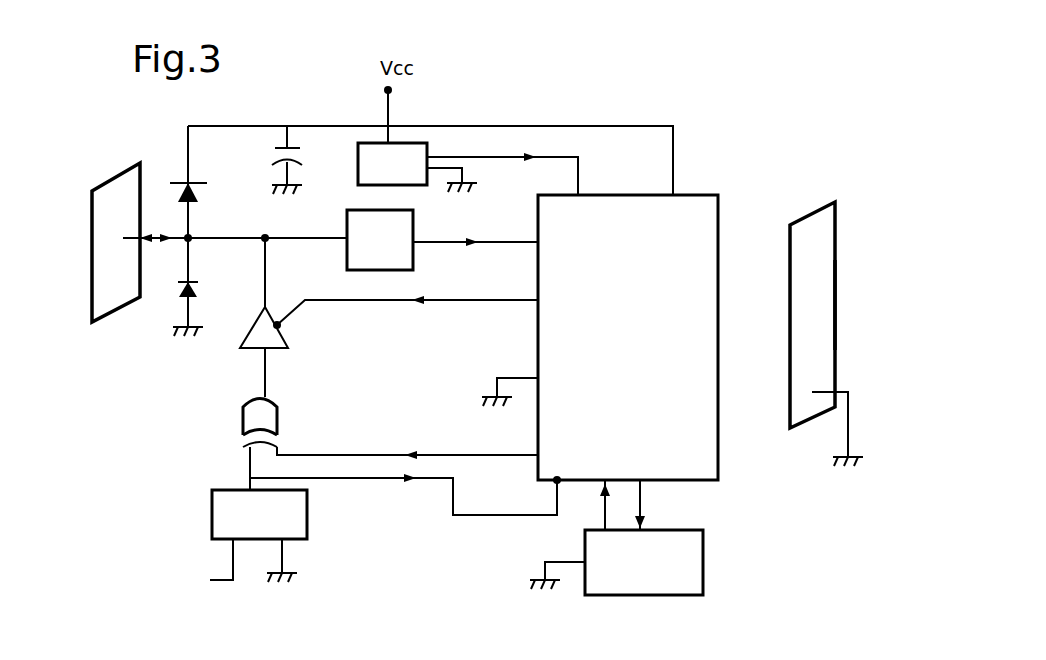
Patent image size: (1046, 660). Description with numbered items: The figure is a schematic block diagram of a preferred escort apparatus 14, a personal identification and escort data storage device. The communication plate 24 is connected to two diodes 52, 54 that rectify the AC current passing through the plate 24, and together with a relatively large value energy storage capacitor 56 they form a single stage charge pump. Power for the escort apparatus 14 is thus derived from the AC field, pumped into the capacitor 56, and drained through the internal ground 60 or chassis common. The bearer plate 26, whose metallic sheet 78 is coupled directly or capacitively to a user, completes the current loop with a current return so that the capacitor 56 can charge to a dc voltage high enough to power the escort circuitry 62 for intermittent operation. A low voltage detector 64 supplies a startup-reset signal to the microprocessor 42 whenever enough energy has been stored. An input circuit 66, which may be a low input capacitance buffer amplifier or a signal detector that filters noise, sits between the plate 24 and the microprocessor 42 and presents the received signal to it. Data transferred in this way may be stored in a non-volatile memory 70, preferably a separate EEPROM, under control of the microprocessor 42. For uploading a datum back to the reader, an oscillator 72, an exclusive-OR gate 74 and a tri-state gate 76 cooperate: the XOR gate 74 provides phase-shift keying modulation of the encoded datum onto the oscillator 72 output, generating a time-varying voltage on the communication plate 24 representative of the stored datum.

The escort apparatus 14 is at (754, 104).
The communication plate 24 is at (128, 190).
The bearer plate 26 is at (812, 230).
The microprocessor 42 is at (548, 352).
The diode 52 is at (198, 189).
The diode 54 is at (199, 289).
The energy storage capacitor 56 is at (275, 157).
The internal ground 60 is at (174, 328).
The escort circuitry 62 is at (612, 113).
The low voltage detector 64 is at (388, 178).
The input circuit 66 is at (416, 266).
The non-volatile memory 70 is at (680, 583).
The oscillator 72 is at (283, 516).
The exclusive-OR gate 74 is at (262, 413).
The tri-state gate 76 is at (270, 341).
The metallic sheet 78 is at (812, 290).